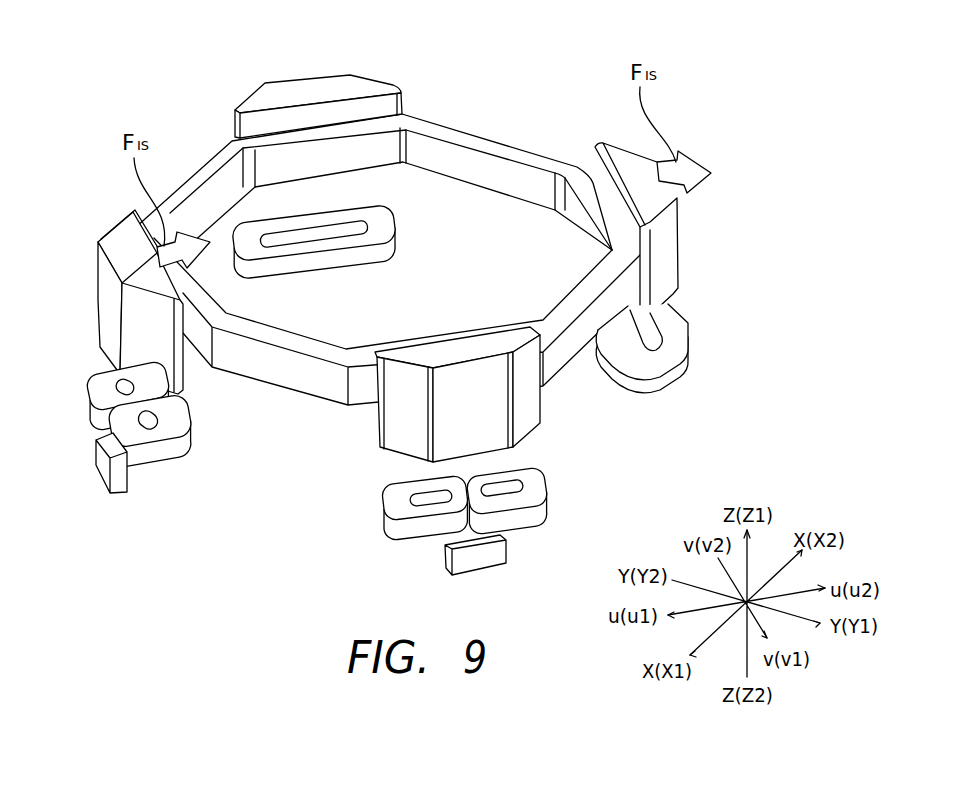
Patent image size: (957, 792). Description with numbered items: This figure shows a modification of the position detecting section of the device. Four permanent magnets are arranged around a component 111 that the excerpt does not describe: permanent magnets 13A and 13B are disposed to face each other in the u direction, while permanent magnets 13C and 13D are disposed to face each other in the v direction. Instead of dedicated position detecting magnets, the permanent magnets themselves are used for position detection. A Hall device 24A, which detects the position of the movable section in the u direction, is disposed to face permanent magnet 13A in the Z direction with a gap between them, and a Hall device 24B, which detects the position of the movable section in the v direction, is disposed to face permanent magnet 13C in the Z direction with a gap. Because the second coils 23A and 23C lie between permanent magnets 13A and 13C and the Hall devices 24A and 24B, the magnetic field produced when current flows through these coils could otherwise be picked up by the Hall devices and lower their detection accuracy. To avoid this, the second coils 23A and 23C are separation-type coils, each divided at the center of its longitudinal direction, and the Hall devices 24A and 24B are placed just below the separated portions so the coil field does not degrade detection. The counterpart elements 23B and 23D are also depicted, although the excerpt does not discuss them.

The frame 111 is at (441, 118).
The permanent magnet 13A is at (115, 237).
The permanent magnet 13B is at (668, 243).
The permanent magnet 13C is at (538, 407).
The permanent magnet 13D is at (353, 84).
The second coil 23A is at (168, 452).
The magnet (second) 23B is at (690, 358).
The second coil 23C is at (400, 525).
The magnet (fourth) 23D is at (397, 230).
The Hall device 24A is at (98, 467).
The Hall device 24B is at (481, 566).